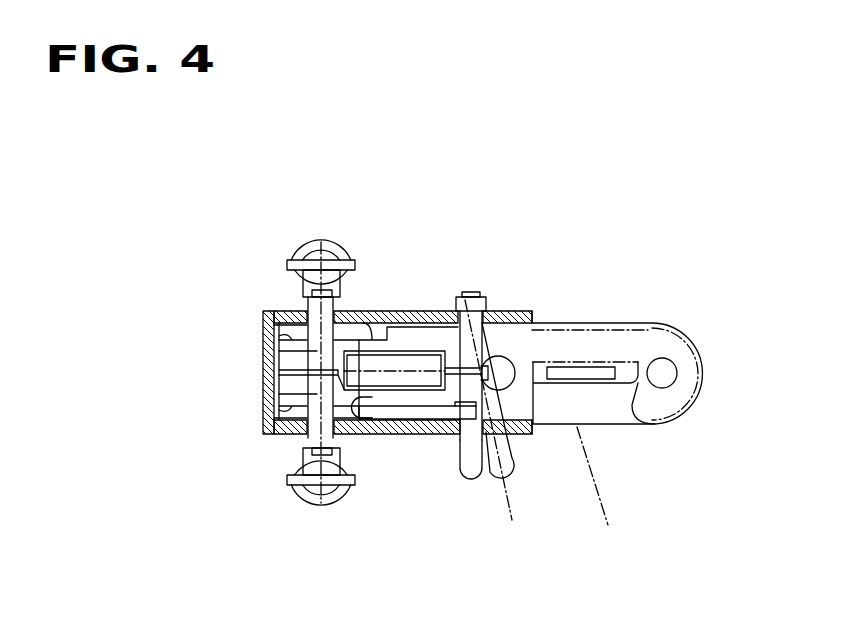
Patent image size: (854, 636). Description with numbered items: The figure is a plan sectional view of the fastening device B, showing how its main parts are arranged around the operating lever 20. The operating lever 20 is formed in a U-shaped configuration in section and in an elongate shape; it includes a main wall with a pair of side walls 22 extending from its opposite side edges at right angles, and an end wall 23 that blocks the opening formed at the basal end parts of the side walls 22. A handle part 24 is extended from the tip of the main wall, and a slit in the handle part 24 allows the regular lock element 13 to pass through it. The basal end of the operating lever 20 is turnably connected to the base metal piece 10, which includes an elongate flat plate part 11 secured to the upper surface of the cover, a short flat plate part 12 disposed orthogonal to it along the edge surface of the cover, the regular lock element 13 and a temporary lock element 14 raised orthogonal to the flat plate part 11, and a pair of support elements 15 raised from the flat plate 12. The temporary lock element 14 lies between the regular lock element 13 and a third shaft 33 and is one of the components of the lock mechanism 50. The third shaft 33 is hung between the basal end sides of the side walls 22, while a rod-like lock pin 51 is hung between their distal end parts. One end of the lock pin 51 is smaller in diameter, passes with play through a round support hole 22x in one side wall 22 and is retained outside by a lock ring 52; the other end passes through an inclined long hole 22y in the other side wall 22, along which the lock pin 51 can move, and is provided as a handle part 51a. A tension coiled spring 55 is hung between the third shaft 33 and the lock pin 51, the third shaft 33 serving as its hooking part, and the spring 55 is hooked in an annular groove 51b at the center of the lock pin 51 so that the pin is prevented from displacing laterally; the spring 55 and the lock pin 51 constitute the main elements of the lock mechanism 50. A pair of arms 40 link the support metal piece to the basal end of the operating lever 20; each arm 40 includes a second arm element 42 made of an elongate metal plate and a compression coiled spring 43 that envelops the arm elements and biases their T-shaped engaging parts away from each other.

The base metal piece 10 is at (714, 369).
The flat plate part 11 is at (670, 337).
The flat plate part 12 is at (362, 437).
The regular lock element 13 is at (603, 374).
The temporary lock element 14 is at (417, 413).
The support elements 15 is at (268, 343).
The operating lever 20 is at (372, 303).
The side walls 22 is at (383, 410).
The support hole 22x is at (490, 311).
The long hole 22y is at (512, 436).
The end wall 23 is at (300, 388).
The handle part 24 is at (611, 497).
The third shaft 33 is at (290, 359).
The arm 40 is at (268, 248).
The second arm element 42 is at (305, 447).
The compression coiled spring 43 is at (307, 243).
The lock mechanism 50 is at (403, 343).
The lock pin 51 is at (477, 487).
The handle part 51a is at (460, 437).
The annular groove 51b is at (487, 358).
The lock ring 52 is at (459, 292).
The tension coiled spring 55 is at (433, 351).
The fastening device B is at (634, 301).